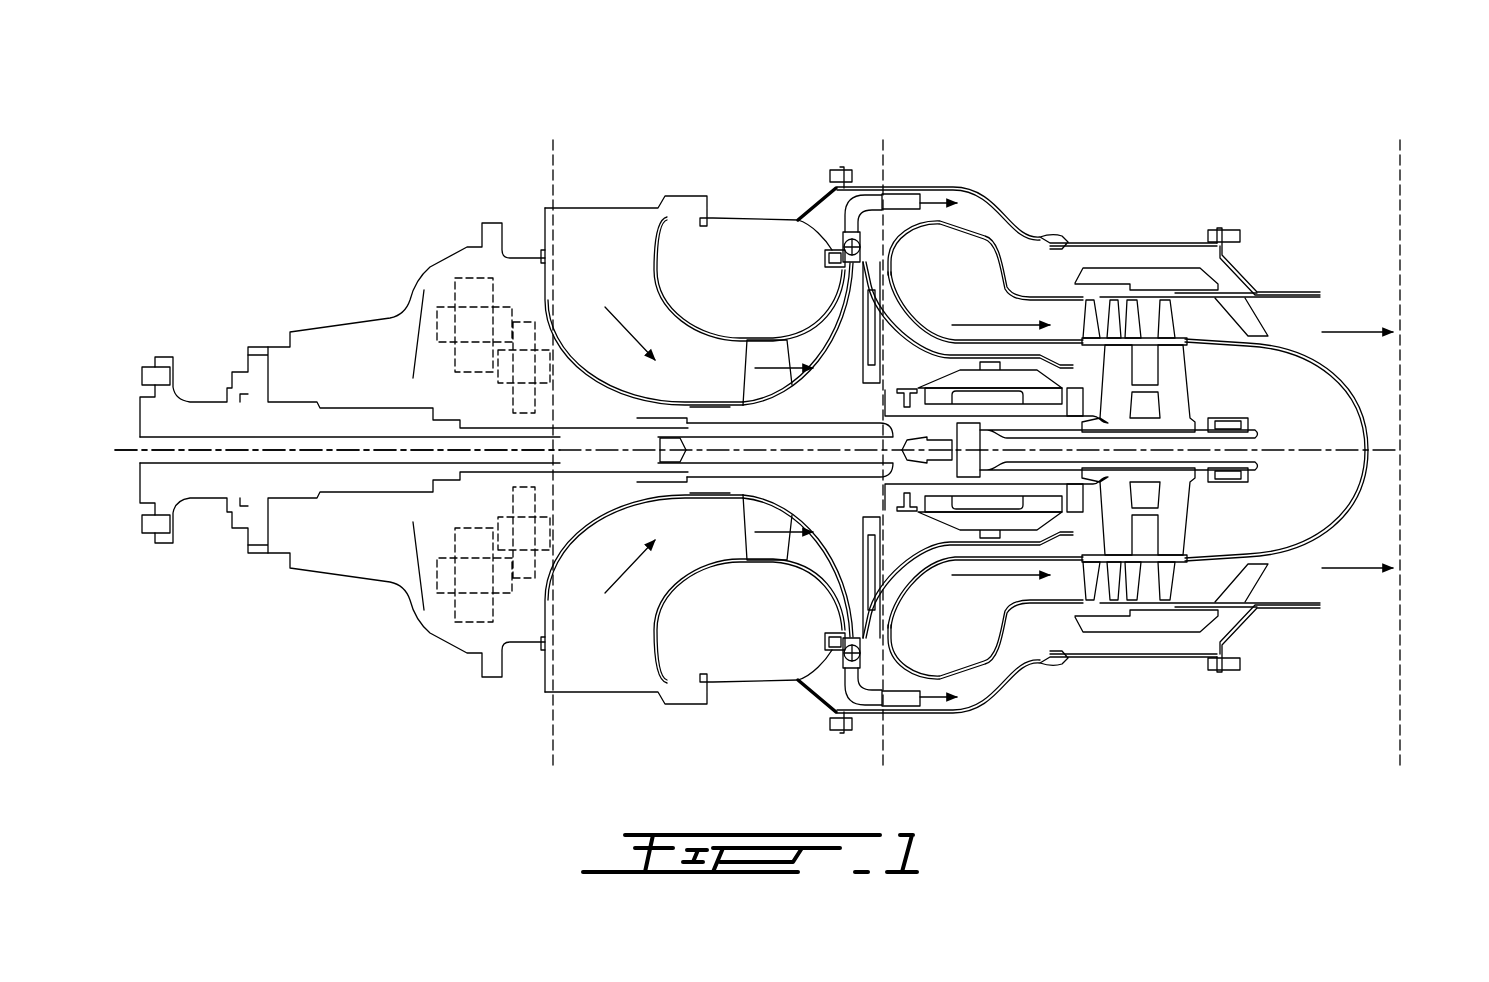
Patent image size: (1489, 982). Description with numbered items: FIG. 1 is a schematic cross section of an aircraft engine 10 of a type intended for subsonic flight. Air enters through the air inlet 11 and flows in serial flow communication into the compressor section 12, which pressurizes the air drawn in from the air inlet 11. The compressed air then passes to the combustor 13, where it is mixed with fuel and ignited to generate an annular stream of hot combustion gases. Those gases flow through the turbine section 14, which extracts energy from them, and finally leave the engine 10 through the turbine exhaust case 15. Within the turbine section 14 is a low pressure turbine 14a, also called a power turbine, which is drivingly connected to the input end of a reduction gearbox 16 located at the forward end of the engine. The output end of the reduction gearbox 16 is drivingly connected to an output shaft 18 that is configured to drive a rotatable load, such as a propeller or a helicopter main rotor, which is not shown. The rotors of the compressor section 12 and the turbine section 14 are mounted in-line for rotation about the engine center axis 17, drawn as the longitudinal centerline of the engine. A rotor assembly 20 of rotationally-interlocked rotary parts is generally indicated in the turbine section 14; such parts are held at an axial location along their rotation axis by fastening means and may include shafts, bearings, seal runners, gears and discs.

The aircraft engine 10 is at (408, 153).
The air inlet 11 is at (595, 220).
The compressor section 12 is at (797, 315).
The combustor 13 is at (963, 258).
The turbine section 14 is at (1148, 265).
The low pressure turbine 14a is at (1170, 357).
The turbine exhaust case 15 is at (1310, 292).
The reduction gearbox 16 is at (437, 283).
The engine center axis 17 is at (128, 447).
The output shaft 18 is at (208, 482).
The rotor assembly 20 is at (1237, 487).